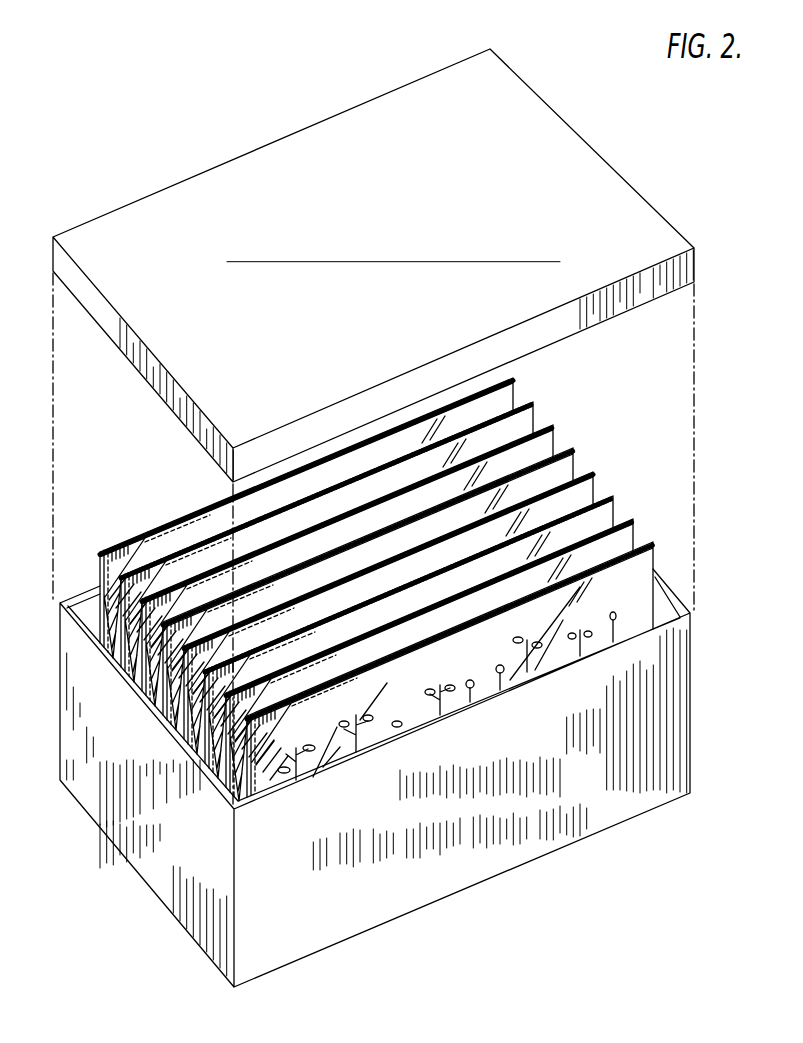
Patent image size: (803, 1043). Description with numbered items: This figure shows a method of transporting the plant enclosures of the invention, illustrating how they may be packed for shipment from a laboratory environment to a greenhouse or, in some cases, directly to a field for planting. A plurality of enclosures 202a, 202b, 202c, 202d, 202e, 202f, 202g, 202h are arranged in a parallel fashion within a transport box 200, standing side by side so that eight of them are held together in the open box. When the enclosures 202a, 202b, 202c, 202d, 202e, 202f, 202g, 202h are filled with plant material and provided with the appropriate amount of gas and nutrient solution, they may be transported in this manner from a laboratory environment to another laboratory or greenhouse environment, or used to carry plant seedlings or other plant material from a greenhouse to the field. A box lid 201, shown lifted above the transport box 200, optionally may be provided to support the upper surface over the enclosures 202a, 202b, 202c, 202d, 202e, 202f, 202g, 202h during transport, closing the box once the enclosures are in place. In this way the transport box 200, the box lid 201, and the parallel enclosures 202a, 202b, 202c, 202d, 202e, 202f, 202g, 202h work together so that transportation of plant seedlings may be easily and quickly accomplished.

The transport box 200 is at (267, 907).
The box lid 201 is at (597, 218).
The enclosure 202a is at (643, 564).
The enclosure 202b is at (623, 541).
The enclosure 202c is at (603, 517).
The enclosure 202d is at (583, 494).
The enclosure 202e is at (563, 470).
The enclosure 202f is at (543, 447).
The enclosure 202g is at (523, 424).
The enclosure 202h is at (503, 400).